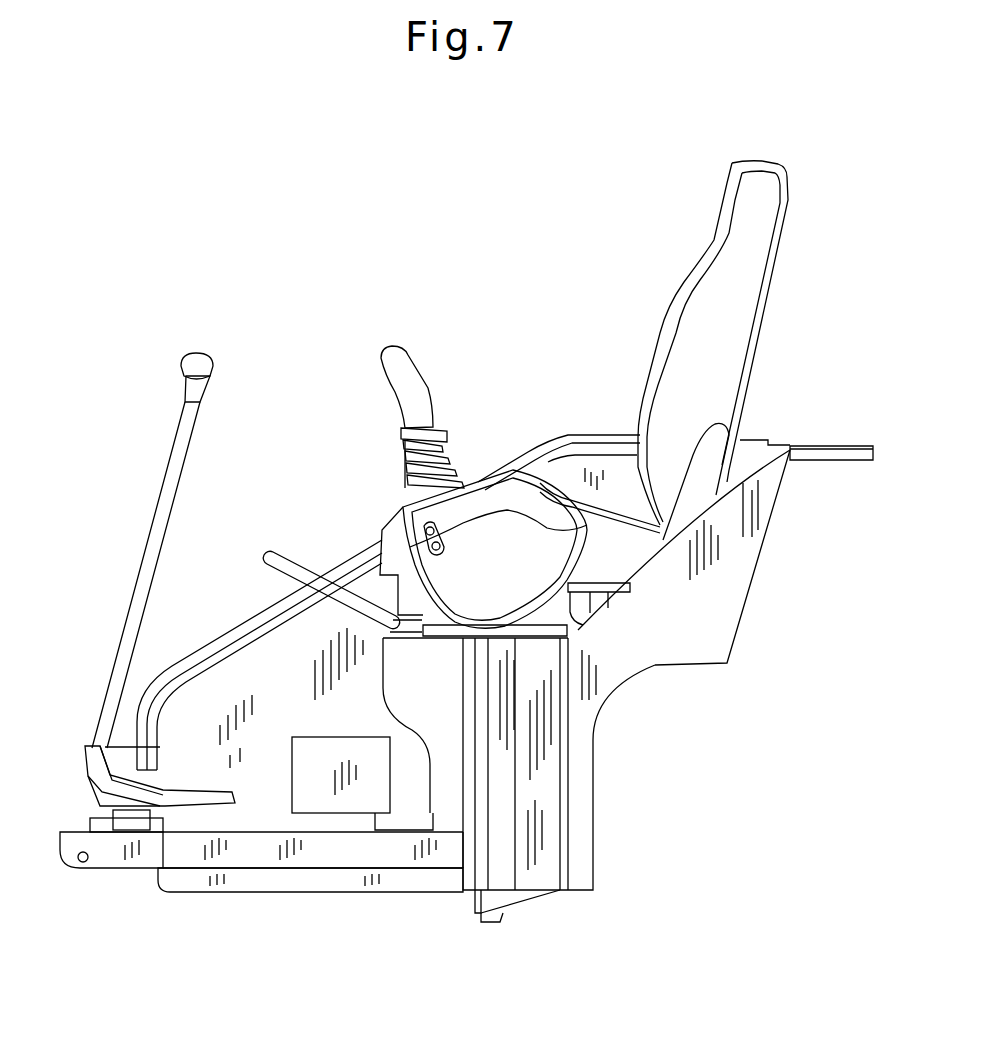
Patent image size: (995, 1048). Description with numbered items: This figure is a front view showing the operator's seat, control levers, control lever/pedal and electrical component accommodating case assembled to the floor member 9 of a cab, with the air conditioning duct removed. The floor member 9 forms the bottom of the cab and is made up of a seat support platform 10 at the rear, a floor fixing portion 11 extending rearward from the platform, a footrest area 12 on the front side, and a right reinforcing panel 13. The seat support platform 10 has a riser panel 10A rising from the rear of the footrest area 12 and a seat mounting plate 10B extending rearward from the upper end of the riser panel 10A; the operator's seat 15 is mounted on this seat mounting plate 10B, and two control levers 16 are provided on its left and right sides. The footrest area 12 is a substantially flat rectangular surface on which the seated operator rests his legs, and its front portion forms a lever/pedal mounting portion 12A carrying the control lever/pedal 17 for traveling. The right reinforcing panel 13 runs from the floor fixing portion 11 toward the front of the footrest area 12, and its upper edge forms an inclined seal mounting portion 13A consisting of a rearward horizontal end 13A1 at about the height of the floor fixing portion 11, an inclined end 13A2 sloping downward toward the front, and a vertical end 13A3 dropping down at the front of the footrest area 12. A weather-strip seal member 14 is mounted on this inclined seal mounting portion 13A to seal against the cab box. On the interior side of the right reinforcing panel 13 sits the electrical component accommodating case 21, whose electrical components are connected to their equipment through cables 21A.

The floor member 9 is at (258, 898).
The seat support platform 10 is at (533, 817).
The riser panel 10A is at (432, 800).
The seat mounting plate 10B is at (530, 633).
The floor fixing portion 11 is at (828, 455).
The footrest area 12 is at (232, 832).
The lever/pedal mounting portion 12A is at (137, 830).
The right reinforcing panel 13 is at (598, 478).
The inclined seal mounting portion 13A is at (552, 472).
The horizontal end 13A1 is at (620, 480).
The inclined end 13A2 is at (263, 643).
The vertical end 13A3 is at (160, 747).
The seal member 14 is at (213, 645).
The operator's seat 15 is at (692, 303).
The control lever 16 is at (397, 353).
The control lever/pedal 17 is at (155, 537).
The electrical component accommodating case 21 is at (333, 785).
The cable 21A is at (378, 825).